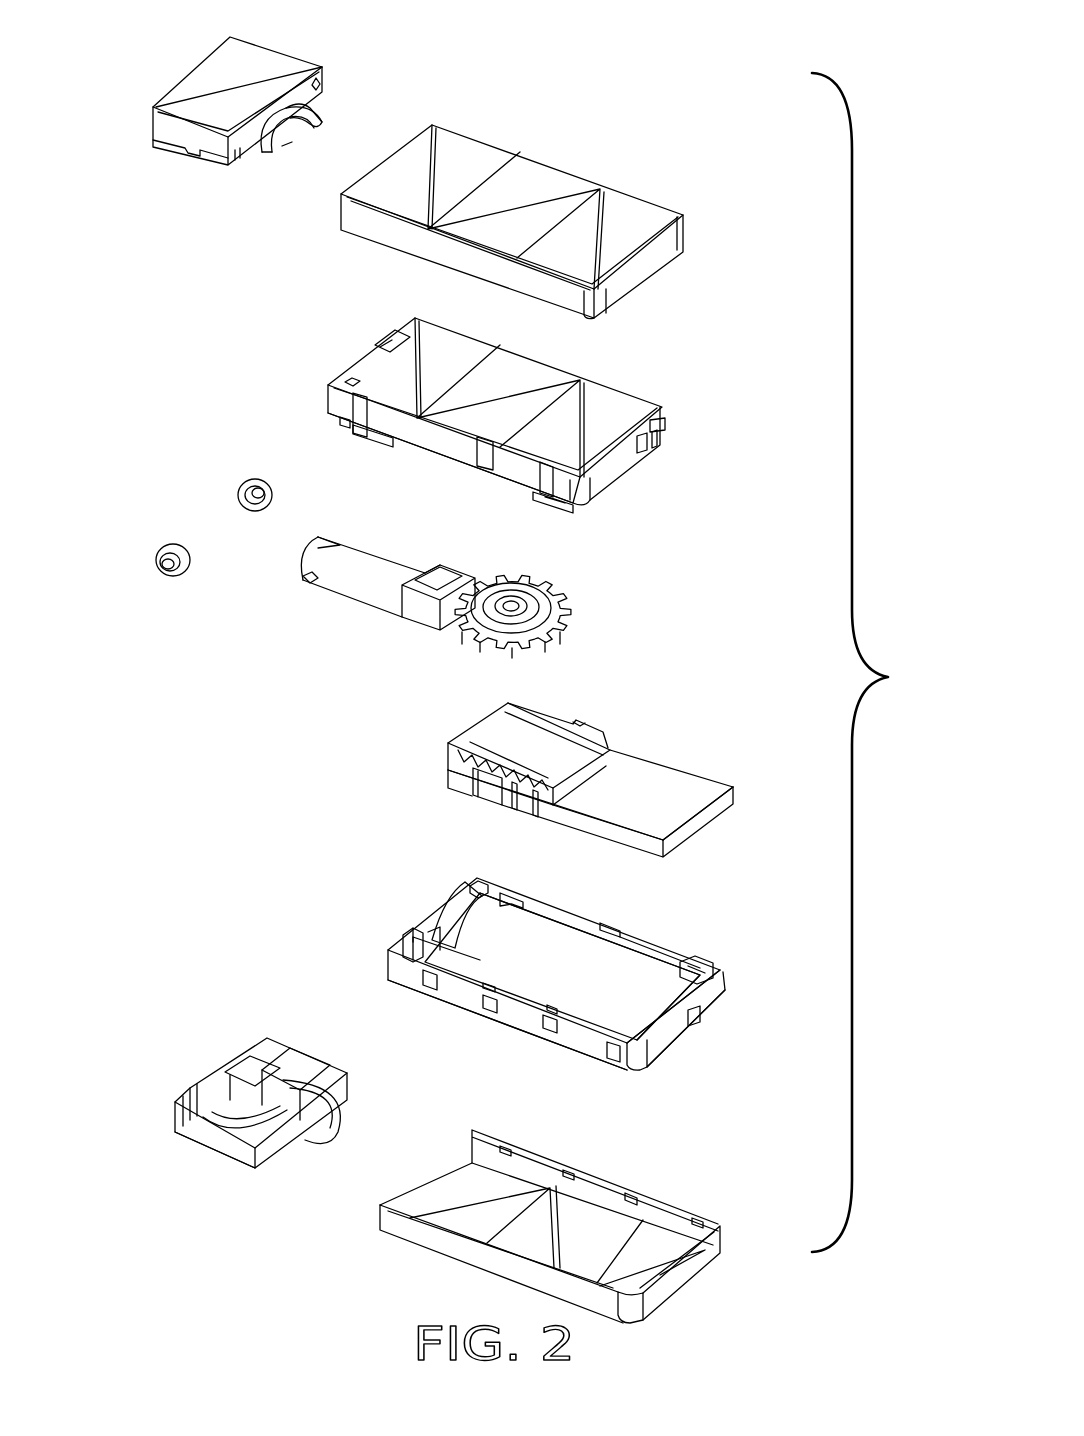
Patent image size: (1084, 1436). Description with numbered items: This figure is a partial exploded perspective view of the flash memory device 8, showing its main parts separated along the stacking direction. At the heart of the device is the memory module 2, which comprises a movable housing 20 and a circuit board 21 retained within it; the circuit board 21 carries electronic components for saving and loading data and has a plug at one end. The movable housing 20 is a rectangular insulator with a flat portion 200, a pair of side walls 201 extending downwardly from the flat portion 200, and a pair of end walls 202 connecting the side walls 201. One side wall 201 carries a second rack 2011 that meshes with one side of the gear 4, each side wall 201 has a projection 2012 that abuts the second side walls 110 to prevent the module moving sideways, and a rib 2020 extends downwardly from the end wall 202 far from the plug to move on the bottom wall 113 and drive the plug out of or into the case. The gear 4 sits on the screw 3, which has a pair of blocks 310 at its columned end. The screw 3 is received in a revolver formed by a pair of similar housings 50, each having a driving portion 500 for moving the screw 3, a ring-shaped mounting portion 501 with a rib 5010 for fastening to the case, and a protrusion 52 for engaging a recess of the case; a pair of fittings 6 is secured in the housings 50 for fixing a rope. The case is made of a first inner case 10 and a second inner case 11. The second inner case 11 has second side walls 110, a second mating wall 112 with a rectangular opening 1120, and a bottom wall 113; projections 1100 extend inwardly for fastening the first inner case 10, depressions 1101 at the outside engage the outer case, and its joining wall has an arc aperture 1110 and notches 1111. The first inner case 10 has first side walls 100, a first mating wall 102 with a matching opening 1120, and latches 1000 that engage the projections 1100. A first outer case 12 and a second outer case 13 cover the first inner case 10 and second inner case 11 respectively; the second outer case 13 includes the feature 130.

The memory module 2 is at (576, 781).
The screw 3 is at (339, 602).
The gear 4 is at (578, 604).
The fittings 6 is at (170, 545).
The flash memory device 8 is at (868, 662).
The first inner case 10 is at (543, 433).
The second inner case 11 is at (505, 980).
The first outer case 12 is at (566, 138).
The second outer case 13 is at (565, 1215).
The movable housing 20 is at (633, 781).
The circuit board 21 is at (471, 756).
The housing 50 is at (271, 584).
The protrusion 52 is at (318, 85).
The first side walls 100 is at (458, 445).
The first mating wall 102 is at (660, 430).
The second side walls 110 is at (655, 960).
The second mating wall 112 is at (665, 1042).
The bottom wall 113 is at (578, 955).
The slot 130 is at (630, 1193).
The flat portion 200 is at (630, 760).
The side walls 201 is at (595, 822).
The end walls 202 is at (705, 820).
The block 310 is at (261, 605).
The driving portion 500 is at (265, 63).
The mounting portion 501 is at (278, 150).
The latches 1000 is at (582, 508).
The projections 1100 is at (475, 890).
The depressions 1101 is at (612, 1062).
The arc aperture 1110 is at (445, 915).
The notches 1111 is at (410, 940).
The rectangular opening 1120 is at (640, 452).
The second rack 2011 is at (478, 750).
The projection 2012 is at (490, 790).
The rib 2020 is at (455, 778).
The rib 5010 is at (318, 114).